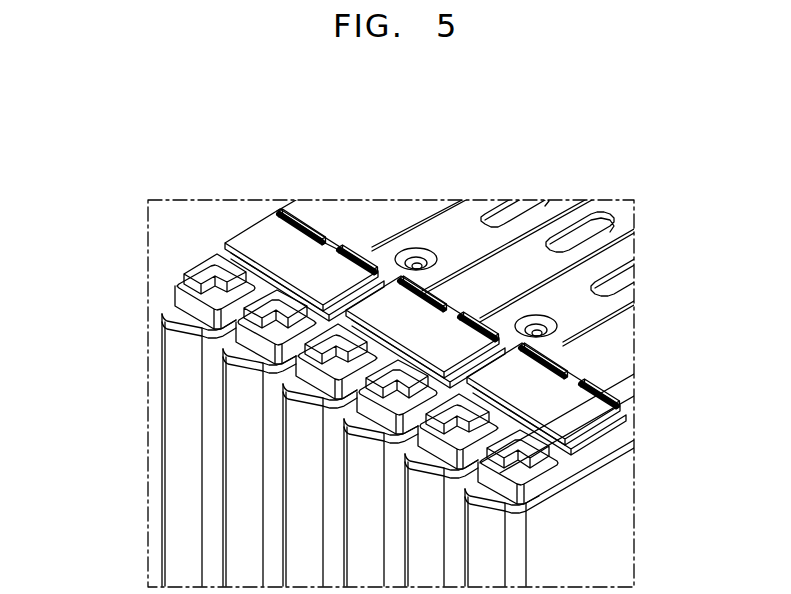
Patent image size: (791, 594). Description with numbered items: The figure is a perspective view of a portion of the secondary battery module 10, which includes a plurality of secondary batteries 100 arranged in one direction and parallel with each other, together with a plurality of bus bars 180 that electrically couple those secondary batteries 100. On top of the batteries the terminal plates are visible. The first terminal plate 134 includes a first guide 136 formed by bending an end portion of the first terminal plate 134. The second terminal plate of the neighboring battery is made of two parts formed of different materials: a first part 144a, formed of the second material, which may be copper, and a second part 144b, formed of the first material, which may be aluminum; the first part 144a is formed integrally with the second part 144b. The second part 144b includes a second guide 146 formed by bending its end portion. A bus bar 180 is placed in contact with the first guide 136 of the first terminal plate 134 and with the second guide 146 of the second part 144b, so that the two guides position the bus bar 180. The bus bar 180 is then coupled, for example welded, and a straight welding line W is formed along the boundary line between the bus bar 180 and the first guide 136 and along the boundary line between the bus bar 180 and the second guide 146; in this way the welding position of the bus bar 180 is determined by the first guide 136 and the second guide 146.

The secondary battery module 10 is at (622, 177).
The secondary battery 100 is at (182, 482).
The first terminal plate 134 is at (205, 270).
The first guide 136 is at (297, 211).
The first part 144a is at (300, 311).
The second part 144b is at (310, 310).
The second guide 146 is at (380, 242).
The bus bar 180 is at (257, 242).
The welding line W is at (343, 242).